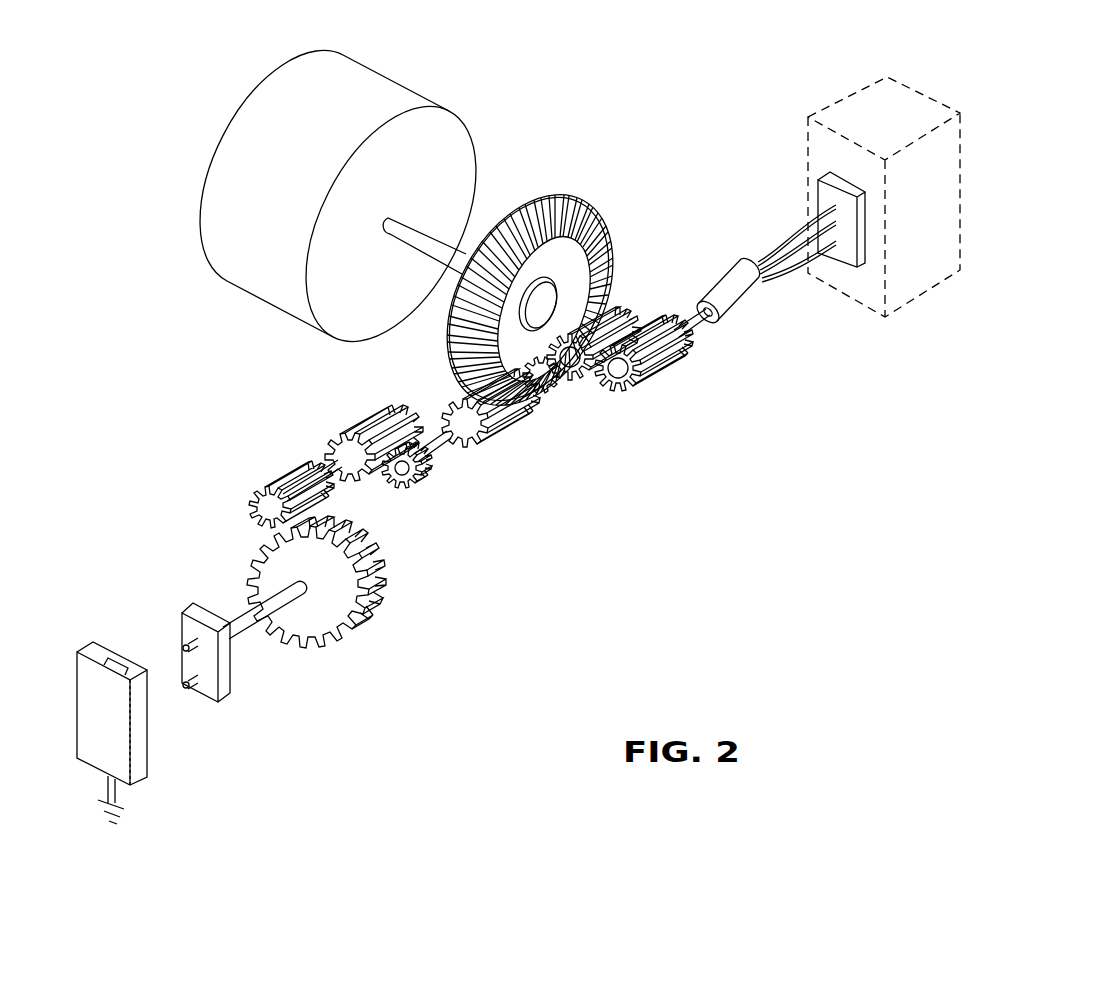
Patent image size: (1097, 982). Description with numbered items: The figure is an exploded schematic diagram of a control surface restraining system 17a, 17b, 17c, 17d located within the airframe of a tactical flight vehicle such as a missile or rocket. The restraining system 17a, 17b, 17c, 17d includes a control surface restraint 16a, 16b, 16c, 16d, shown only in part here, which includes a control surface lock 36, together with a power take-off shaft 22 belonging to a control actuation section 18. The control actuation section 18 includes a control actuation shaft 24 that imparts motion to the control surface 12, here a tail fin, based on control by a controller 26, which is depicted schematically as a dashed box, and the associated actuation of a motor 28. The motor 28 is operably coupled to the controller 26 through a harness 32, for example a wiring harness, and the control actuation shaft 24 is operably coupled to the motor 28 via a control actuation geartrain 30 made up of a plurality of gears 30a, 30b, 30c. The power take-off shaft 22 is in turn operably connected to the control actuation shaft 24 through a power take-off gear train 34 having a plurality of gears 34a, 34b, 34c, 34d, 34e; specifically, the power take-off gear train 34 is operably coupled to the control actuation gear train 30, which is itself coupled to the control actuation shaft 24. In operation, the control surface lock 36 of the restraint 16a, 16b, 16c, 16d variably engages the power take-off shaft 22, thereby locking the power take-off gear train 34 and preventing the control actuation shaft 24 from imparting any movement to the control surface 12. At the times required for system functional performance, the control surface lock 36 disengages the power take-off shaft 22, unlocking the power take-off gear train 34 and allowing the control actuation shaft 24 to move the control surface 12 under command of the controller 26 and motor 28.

The control surface 12 is at (232, 168).
The control surface restraint 16a is at (206, 750).
The control surface restraint 16b is at (206, 750).
The control surface restraint 16c is at (206, 750).
The control surface restraint 16d is at (150, 805).
The control surface restraining system 17a is at (188, 678).
The control surface restraining system 17b is at (188, 678).
The control surface restraining system 17c is at (188, 678).
The control surface restraining system 17d is at (42, 657).
The control actuation section 18 is at (882, 408).
The power take-off shaft 22 is at (225, 662).
The control actuation shaft 24 is at (434, 242).
The controller 26 is at (877, 107).
The motor 28 is at (735, 288).
The control actuation geartrain 30 is at (750, 413).
The gear 30a is at (657, 367).
The gear 30b is at (587, 378).
The gear 30c is at (550, 375).
The harness 32 is at (790, 233).
The power take-off gear train 34 is at (553, 543).
The gear 34a is at (320, 602).
The gear 34b is at (313, 503).
The gear 34c is at (383, 482).
The gear 34d is at (435, 477).
The gear 34e is at (502, 443).
The control surface lock 36 is at (113, 716).